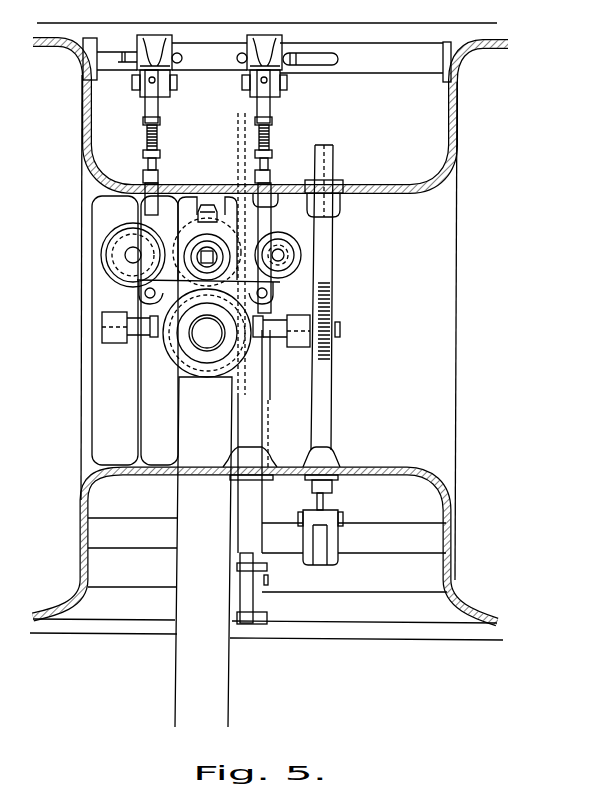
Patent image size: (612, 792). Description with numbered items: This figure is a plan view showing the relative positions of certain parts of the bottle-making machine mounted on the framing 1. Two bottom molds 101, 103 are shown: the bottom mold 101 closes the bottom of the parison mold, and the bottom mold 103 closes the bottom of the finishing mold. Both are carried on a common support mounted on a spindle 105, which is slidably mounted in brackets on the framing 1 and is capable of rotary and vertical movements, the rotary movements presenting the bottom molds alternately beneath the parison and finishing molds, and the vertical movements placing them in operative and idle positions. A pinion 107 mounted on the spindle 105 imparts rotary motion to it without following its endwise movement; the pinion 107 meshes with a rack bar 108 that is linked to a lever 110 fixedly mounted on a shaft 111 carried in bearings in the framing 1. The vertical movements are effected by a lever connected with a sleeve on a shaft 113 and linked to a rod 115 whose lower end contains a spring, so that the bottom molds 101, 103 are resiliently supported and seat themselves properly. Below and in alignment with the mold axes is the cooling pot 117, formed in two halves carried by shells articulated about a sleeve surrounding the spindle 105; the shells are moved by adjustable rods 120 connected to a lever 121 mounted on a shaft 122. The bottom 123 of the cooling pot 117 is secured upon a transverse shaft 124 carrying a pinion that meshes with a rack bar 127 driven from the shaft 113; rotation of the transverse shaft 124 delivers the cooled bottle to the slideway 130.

The framing 1 is at (411, 470).
The bottom mold 101 is at (292, 256).
The bottom mold 103 is at (112, 250).
The spindle 105 is at (207, 250).
The pinion 107 is at (177, 236).
The rack bar 108 is at (248, 128).
The lever 110 is at (318, 543).
The shaft 111 is at (267, 604).
The shaft 113 is at (354, 541).
The rod 115 is at (252, 623).
The cooling pot 117 is at (187, 363).
The rod 120 is at (260, 98).
The lever 121 is at (260, 50).
The shaft 122 is at (270, 58).
The bottom of the cooling pot 123 is at (208, 335).
The transverse shaft 124 is at (147, 335).
The rack bar 127 is at (323, 387).
The slideway 130 is at (203, 552).